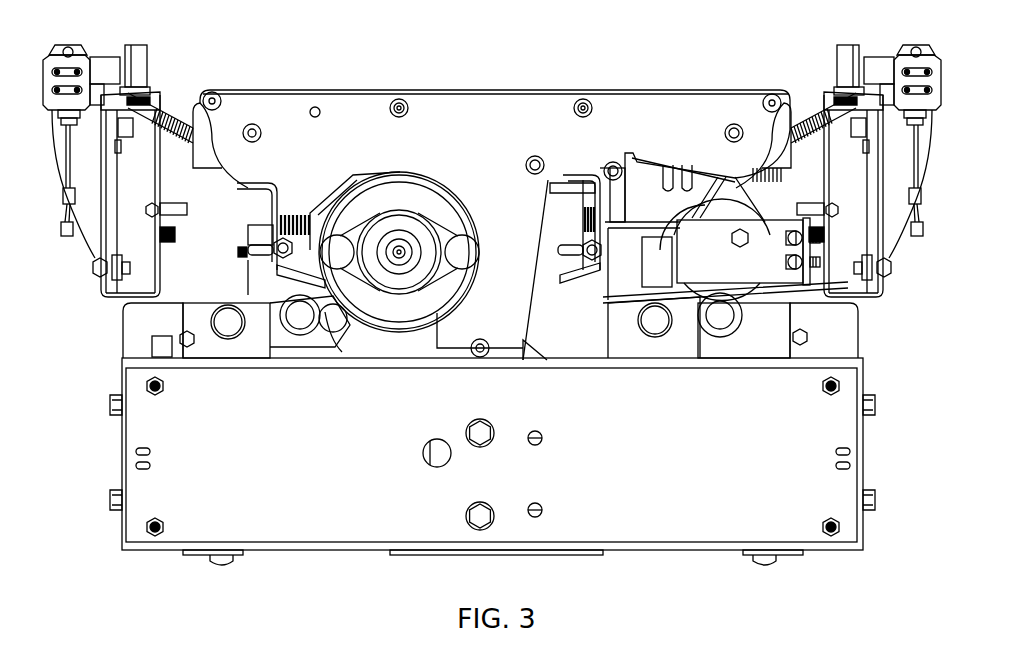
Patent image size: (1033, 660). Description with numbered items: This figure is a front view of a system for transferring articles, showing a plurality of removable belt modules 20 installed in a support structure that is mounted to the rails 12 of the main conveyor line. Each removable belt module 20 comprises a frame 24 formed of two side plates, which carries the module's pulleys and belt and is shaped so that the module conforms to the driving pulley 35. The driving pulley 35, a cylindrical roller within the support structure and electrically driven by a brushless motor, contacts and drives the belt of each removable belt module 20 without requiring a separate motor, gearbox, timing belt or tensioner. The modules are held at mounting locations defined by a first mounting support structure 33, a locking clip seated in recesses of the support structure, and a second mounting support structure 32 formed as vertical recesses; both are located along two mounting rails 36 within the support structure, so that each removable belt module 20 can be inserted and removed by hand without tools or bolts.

The removable belt module 20 is at (707, 75).
The frame 24 is at (501, 102).
The driving pulley 35 is at (390, 188).
The second mounting support structure 32 is at (290, 217).
The first mounting support structure 33 is at (613, 205).
The mounting rails 36 is at (265, 217).
The rails 12 is at (147, 190).